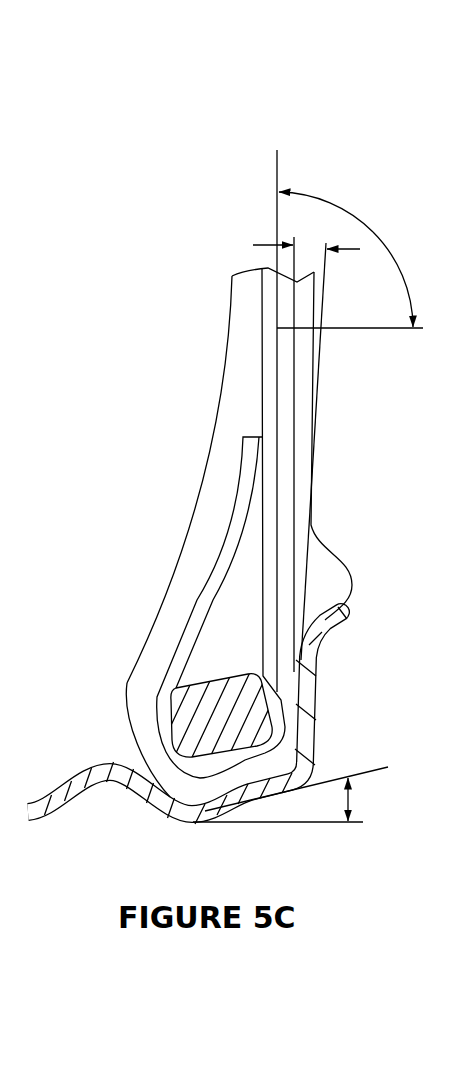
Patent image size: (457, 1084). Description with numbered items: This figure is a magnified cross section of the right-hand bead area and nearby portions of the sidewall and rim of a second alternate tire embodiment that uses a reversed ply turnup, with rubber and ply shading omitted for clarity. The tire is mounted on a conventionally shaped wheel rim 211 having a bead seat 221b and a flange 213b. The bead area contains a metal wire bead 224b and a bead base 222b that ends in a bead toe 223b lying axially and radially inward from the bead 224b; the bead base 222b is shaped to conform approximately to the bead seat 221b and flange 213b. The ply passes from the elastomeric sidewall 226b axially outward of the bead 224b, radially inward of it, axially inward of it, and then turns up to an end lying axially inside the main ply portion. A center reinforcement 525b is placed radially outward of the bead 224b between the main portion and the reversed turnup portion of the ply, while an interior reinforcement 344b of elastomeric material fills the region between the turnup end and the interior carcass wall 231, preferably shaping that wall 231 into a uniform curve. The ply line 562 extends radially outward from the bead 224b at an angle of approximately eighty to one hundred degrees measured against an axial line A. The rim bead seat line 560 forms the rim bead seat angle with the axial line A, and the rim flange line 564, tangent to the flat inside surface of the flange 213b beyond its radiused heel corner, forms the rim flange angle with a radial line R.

The ply line 562 is at (276, 172).
The rim flange line 564 is at (321, 335).
The rim bead seat line 560 is at (365, 775).
The elastomeric sidewall 226b is at (300, 406).
The interior reinforcement 344b is at (205, 538).
The interior wall 231 is at (180, 551).
The center reinforcement 525b is at (228, 612).
The metal wire bead 224b is at (213, 705).
The rim 211 is at (53, 796).
The rim flange 213b is at (321, 678).
The bead toe 223b is at (173, 793).
The bead base 222b is at (246, 784).
The bead seat 221b is at (203, 826).
The parting line PL′ is at (276, 210).
The axial line A is at (403, 328).
The radial line R is at (297, 306).